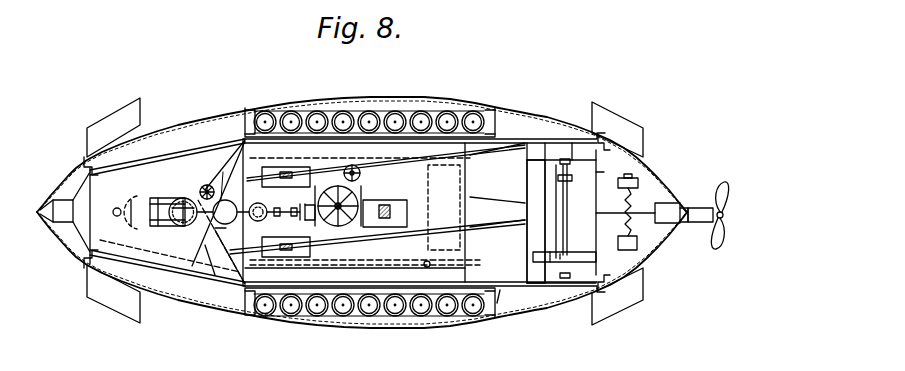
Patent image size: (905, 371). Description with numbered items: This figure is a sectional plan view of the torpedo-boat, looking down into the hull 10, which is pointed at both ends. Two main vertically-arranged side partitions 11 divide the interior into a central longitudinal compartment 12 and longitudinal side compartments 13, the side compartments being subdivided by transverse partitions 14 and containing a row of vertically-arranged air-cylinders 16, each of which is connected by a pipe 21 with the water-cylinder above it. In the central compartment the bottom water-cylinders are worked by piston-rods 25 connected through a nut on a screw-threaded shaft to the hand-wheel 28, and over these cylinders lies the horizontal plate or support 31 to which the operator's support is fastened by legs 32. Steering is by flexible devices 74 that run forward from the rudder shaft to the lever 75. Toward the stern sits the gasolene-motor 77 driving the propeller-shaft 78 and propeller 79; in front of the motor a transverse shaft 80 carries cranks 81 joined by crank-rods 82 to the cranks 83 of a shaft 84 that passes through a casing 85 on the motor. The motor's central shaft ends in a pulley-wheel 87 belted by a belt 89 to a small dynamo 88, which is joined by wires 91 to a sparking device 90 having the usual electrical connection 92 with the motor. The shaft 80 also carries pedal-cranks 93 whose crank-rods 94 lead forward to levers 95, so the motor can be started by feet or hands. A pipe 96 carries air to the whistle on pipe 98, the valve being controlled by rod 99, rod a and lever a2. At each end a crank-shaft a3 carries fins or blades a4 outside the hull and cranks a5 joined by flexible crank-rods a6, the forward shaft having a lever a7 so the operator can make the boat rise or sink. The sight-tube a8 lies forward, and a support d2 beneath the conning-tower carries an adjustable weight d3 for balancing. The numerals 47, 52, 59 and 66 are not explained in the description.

The hull 10 is at (478, 106).
The side partitions 11 is at (217, 133).
The central longitudinal compartment 12 is at (424, 212).
The longitudinal side compartments 13 is at (375, 98).
The transverse partitions 14 is at (243, 120).
The air-cylinders 16 is at (316, 118).
The pipe 21 is at (354, 104).
The piston-rod 25 is at (312, 224).
The hand-wheel 28 is at (362, 232).
The horizontal plate or support 31 is at (462, 268).
The legs 32 is at (302, 177).
The lever 47 is at (224, 172).
The gear 52 is at (206, 186).
The hand wheel 59 is at (361, 173).
The dashed outline member 66 is at (377, 160).
The flexible devices 74 is at (237, 145).
The lever 75 is at (196, 203).
The gasolene-motor 77 is at (640, 262).
The propeller-shaft 78 is at (650, 208).
The propeller 79 is at (726, 193).
The shaft 80 is at (538, 184).
The cranks 81 is at (526, 160).
The crank-rods 82 is at (545, 158).
The cranks 83 is at (570, 162).
The shaft 84 is at (572, 142).
The casing 85 is at (533, 257).
The pulley-wheel 87 is at (570, 181).
The dynamo 88 is at (634, 177).
The belt 89 is at (598, 173).
The sparking device 90 is at (638, 241).
The wires 91 is at (627, 208).
The electrical connection 92 is at (630, 240).
The pedal-cranks 93 is at (513, 203).
The crank-rods 94 is at (393, 190).
The levers 95 is at (257, 176).
The pipe 96 is at (116, 216).
The pipe 98 is at (126, 205).
The rod 99 is at (460, 302).
The rod a is at (210, 277).
The lever a2 is at (185, 267).
The crank-shaft a3 is at (85, 218).
The fins or blades a4 is at (365, 211).
The cranks a5 is at (98, 175).
The flexible crank-rods a6 is at (165, 170).
The lever a7 is at (141, 204).
The sight-tube a8 is at (168, 196).
The support d2 is at (294, 205).
The adjustable weight d3 is at (274, 203).